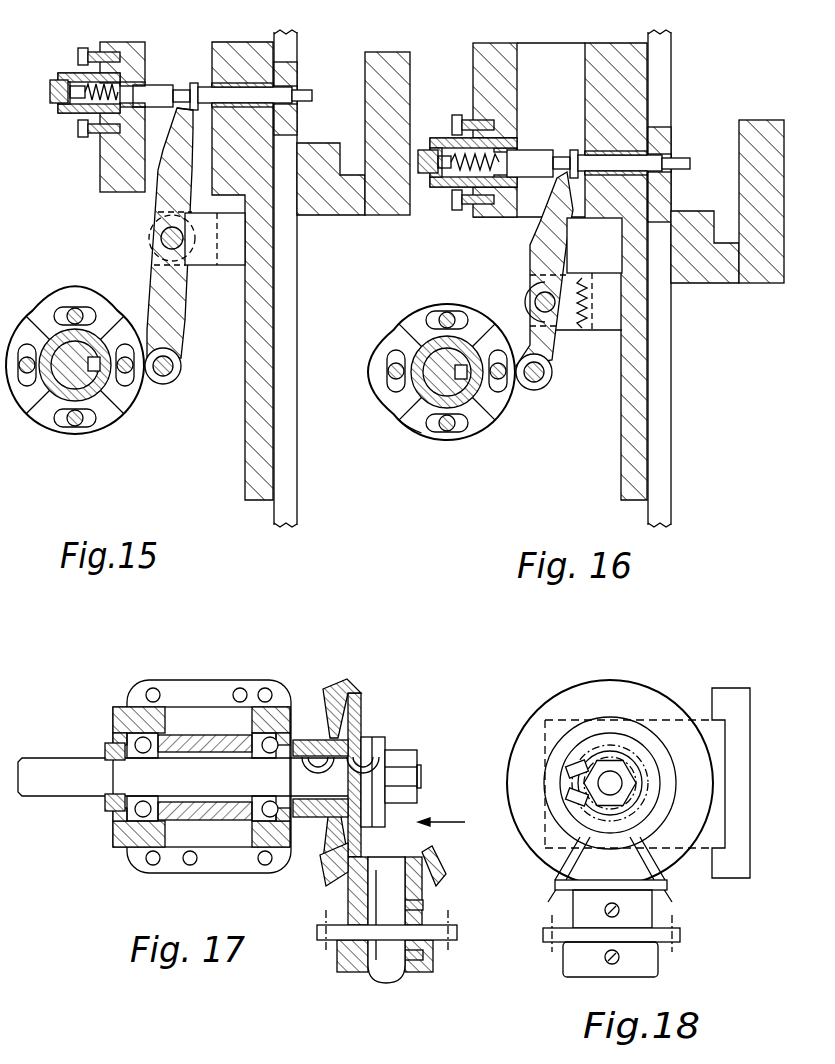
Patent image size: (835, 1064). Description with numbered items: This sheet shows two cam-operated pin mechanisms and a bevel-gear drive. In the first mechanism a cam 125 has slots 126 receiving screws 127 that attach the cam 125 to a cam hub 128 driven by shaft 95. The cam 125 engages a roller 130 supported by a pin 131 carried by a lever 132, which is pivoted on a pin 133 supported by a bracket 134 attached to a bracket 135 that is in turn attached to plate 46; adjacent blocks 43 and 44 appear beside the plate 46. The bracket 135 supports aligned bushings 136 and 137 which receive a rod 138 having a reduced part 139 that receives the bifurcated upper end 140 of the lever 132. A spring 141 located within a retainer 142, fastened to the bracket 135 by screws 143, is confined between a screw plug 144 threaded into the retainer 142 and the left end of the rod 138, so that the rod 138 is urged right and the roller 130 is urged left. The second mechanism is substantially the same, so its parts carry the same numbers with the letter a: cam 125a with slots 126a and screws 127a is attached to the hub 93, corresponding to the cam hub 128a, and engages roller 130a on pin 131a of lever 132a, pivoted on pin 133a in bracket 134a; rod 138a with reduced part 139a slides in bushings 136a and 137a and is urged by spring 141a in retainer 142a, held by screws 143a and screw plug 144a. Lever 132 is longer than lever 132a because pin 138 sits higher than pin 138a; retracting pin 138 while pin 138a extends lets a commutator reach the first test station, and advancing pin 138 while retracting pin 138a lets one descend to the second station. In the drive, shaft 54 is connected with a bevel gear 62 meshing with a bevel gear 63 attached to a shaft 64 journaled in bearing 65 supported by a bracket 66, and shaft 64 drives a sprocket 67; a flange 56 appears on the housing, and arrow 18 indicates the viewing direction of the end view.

In FIG. 15, the bracket 135 is at (256, 42).
In FIG. 16, the bracket 135 is at (560, 262).
In FIG. 15, the plate 46 is at (298, 260).
In FIG. 16, the plate 46 is at (674, 278).
In FIG. 15, the step block 44 is at (326, 216).
In FIG. 16, the step block 44 is at (705, 258).
In FIG. 15, the block 43 is at (385, 216).
In FIG. 16, the block 43 is at (761, 213).
In FIG. 15, the retainer 142 is at (100, 44).
In FIG. 15, the screws 143 is at (78, 57).
In FIG. 15, the spring 141 is at (88, 93).
In FIG. 15, the screw plug 144 is at (50, 101).
In FIG. 15, the bushing 136 is at (136, 84).
In FIG. 15, the reduced part 139 is at (193, 82).
In FIG. 15, the bushing 137 is at (238, 86).
In FIG. 15, the rod 138 is at (306, 92).
In FIG. 15, the bifurcated upper end 140 is at (181, 111).
In FIG. 15, the lever 132 is at (163, 206).
In FIG. 15, the pin 133 is at (162, 241).
In FIG. 15, the bracket 134 is at (200, 267).
In FIG. 15, the roller 130 is at (182, 369).
In FIG. 15, the pin 131 is at (171, 374).
In FIG. 15, the cam 125 is at (84, 294).
In FIG. 15, the cam hub 128 is at (110, 395).
In FIG. 15, the shaft 95 is at (68, 390).
In FIG. 16, the shaft 95 is at (436, 394).
In FIG. 15, the slots 126 is at (96, 317).
In FIG. 15, the screws 127 is at (82, 311).
In FIG. 16, the retainer 142a is at (478, 130).
In FIG. 16, the screws 143a is at (459, 114).
In FIG. 16, the spring 141a is at (452, 189).
In FIG. 16, the screw plug 144a is at (462, 144).
In FIG. 16, the bushing 136a is at (538, 148).
In FIG. 16, the reduced part 139a is at (574, 164).
In FIG. 16, the bushing 137a is at (620, 148).
In FIG. 16, the rod 138a is at (693, 151).
In FIG. 16, the lever 132a is at (533, 251).
In FIG. 16, the pin 133a is at (537, 300).
In FIG. 16, the bracket 134a is at (596, 272).
In FIG. 16, the roller 130a is at (553, 374).
In FIG. 16, the pin 131a is at (541, 380).
In FIG. 16, the cam 125a is at (440, 306).
In FIG. 16, the hub 93 is at (385, 427).
In FIG. 16, the cam hub 128a is at (447, 372).
In FIG. 16, the slots 126a is at (390, 392).
In FIG. 16, the screws 127a is at (394, 364).
In FIG. 17, the bracket 66 is at (226, 874).
In FIG. 18, the bracket 66 is at (728, 880).
In FIG. 17, the shaft 64 is at (72, 798).
In FIG. 18, the shaft 64 is at (568, 800).
In FIG. 17, the bearing 65 is at (133, 740).
In FIG. 17, the bevel gear 63 is at (343, 684).
In FIG. 18, the bevel gear 63 is at (678, 702).
In FIG. 17, the sprocket 67 is at (386, 740).
In FIG. 18, the sprocket 67 is at (568, 768).
In FIG. 17, the arrow 18 is at (452, 827).
In FIG. 17, the bevel gear 62 is at (432, 878).
In FIG. 18, the bevel gear 62 is at (667, 884).
In FIG. 17, the shaft 54 is at (378, 984).
In FIG. 17, the flange 56 is at (424, 970).
In FIG. 18, the flange 56 is at (680, 938).